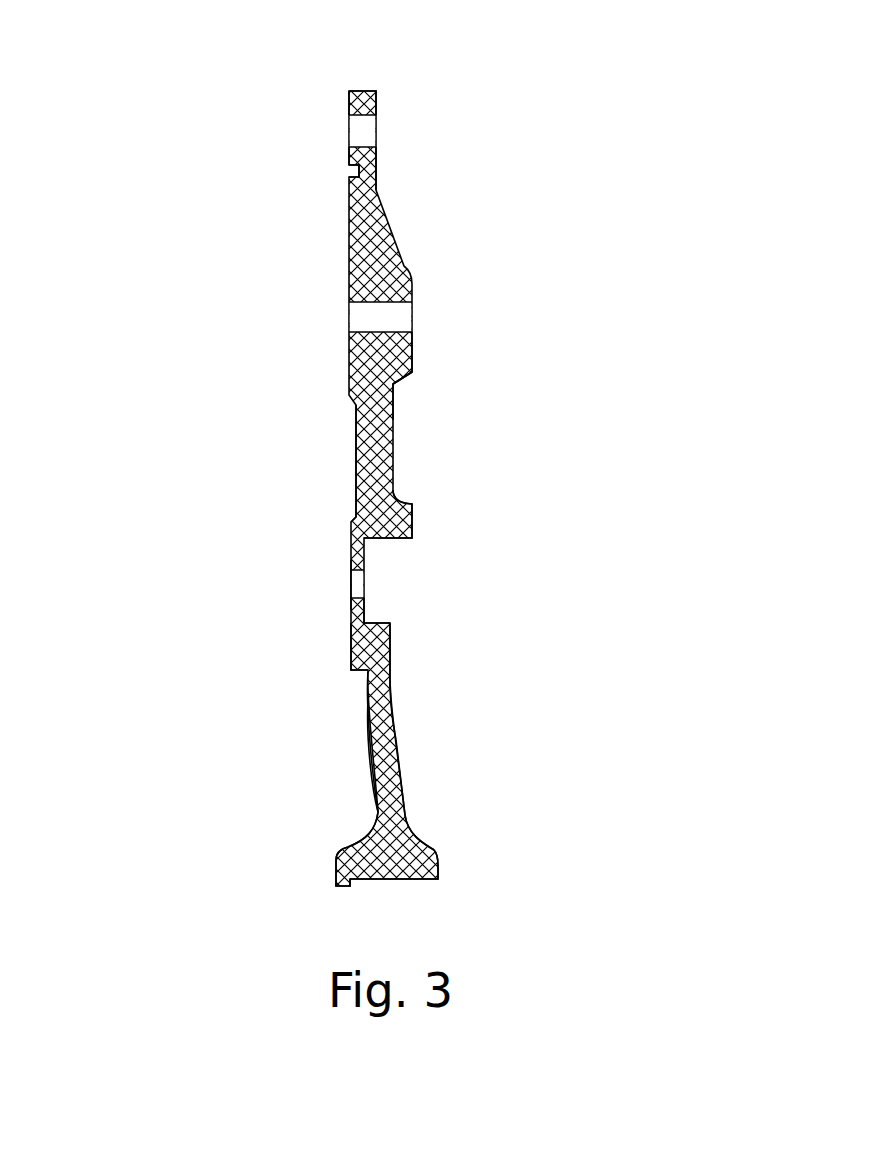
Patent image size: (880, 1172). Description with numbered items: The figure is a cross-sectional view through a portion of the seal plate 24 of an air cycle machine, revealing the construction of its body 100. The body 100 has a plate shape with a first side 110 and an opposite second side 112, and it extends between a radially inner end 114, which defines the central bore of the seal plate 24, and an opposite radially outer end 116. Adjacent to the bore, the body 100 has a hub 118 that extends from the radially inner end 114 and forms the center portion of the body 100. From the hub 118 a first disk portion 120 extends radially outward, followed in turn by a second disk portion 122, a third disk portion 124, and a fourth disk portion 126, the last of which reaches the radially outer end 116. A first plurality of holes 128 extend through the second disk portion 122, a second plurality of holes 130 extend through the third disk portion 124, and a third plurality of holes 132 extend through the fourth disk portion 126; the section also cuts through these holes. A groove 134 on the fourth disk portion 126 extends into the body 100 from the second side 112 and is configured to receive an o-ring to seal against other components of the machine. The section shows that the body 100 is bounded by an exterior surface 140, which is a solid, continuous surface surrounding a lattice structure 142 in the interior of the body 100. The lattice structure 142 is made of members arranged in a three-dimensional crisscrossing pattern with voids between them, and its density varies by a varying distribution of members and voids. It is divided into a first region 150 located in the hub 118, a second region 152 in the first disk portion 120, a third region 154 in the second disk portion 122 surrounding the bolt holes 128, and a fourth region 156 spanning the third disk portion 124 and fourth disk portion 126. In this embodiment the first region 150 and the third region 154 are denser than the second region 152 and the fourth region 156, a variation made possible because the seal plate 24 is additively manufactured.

The seal plate 24 is at (127, 144).
The body 100 is at (393, 243).
The first side 110 is at (349, 589).
The second side 112 is at (416, 343).
The radially inner end 114 is at (343, 891).
The radially outer end 116 is at (366, 87).
The hub 118 is at (434, 857).
The first disk portion 120 is at (396, 725).
The second disk portion 122 is at (366, 613).
The third disk portion 124 is at (393, 376).
The fourth disk portion 126 is at (374, 152).
The first plurality of holes 128 is at (366, 582).
The second plurality of holes 130 is at (388, 315).
The third plurality of holes 132 is at (365, 128).
The groove 134 is at (357, 170).
The exterior surface 140 is at (396, 683).
The lattice structure 142 is at (412, 492).
The first region 150 is at (357, 845).
The second region 152 is at (378, 748).
The third region 154 is at (351, 640).
The fourth region 156 is at (354, 434).